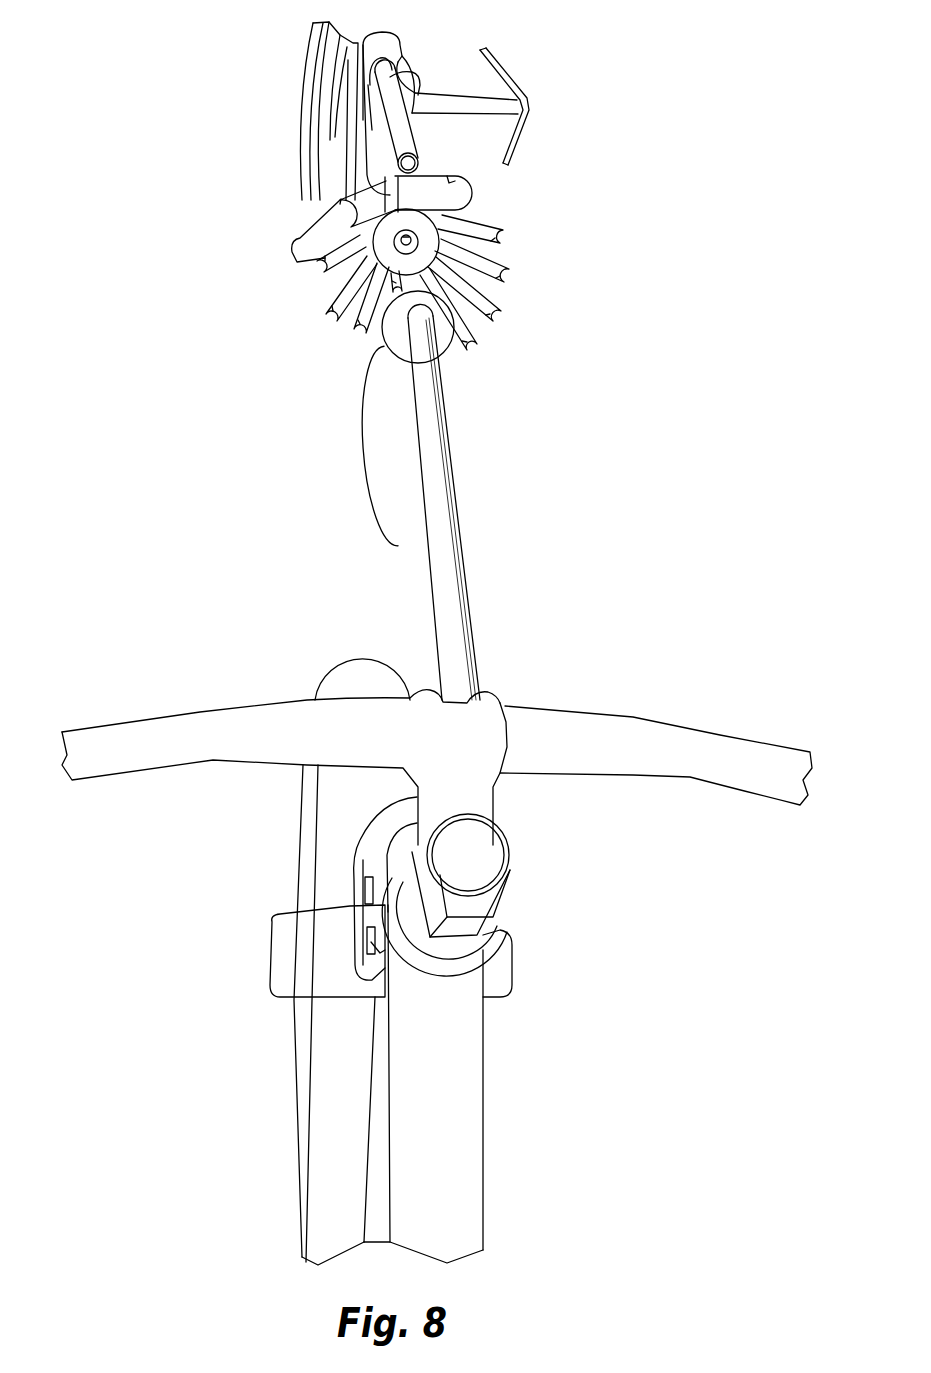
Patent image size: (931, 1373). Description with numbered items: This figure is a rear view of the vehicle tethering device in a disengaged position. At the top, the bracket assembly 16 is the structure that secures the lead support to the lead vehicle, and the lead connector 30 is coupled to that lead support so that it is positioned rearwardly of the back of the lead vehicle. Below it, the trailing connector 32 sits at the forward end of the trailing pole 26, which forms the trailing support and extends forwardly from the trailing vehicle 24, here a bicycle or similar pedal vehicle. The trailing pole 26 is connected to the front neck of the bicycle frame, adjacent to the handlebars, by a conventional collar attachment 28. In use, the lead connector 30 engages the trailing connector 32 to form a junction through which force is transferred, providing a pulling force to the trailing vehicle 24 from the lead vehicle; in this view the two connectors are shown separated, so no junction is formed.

The bracket assembly 16 is at (408, 26).
The trailing vehicle 24 is at (457, 1120).
The trailing pole 26 is at (447, 587).
The collar attachment 28 is at (378, 827).
The lead connector 30 is at (383, 242).
The trailing connector 32 is at (397, 336).